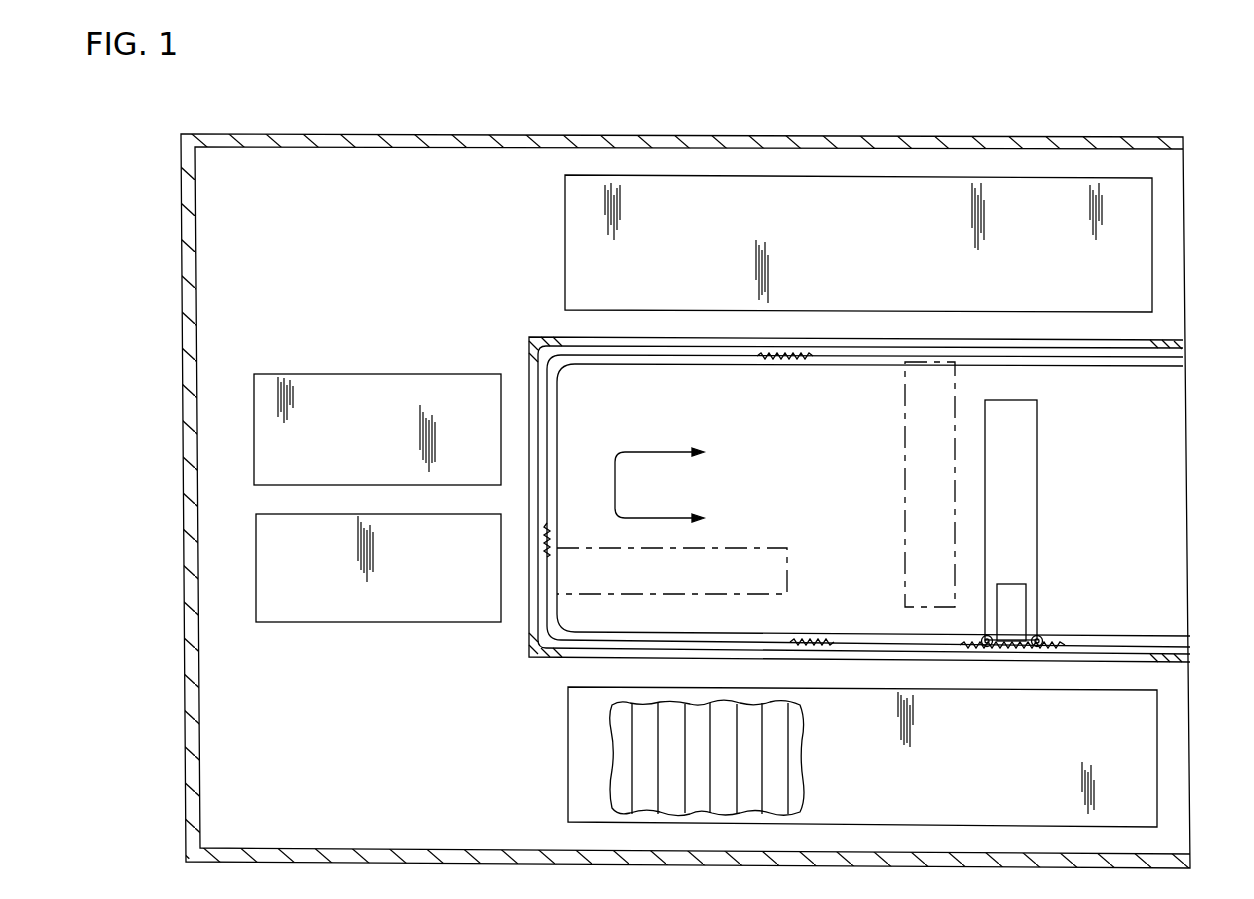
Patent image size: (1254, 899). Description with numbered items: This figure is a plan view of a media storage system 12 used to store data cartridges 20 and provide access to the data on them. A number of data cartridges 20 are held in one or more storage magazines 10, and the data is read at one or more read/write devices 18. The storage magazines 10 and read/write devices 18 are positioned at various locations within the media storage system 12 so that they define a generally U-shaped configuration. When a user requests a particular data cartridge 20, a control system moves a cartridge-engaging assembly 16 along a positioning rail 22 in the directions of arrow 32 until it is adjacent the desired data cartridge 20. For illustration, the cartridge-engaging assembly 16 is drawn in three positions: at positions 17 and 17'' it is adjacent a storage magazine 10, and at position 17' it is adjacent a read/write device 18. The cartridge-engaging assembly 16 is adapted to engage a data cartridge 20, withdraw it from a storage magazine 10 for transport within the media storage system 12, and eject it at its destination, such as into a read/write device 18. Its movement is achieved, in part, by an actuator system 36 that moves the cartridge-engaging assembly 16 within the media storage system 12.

The storage magazine 10 is at (822, 175).
The media storage system 12 is at (295, 128).
The cartridge-engaging assembly 16 is at (1048, 514).
The position of cartridge-engaging assembly 17 is at (1044, 520).
The position of cartridge-engaging assembly 17' is at (685, 554).
The position of cartridge-engaging assembly 17'' is at (905, 484).
The read/write device 18 is at (290, 514).
The data cartridge 20 is at (705, 795).
The positioning rail 22 is at (1159, 634).
The arrow 32 is at (617, 486).
The actuator system 36 is at (1042, 637).